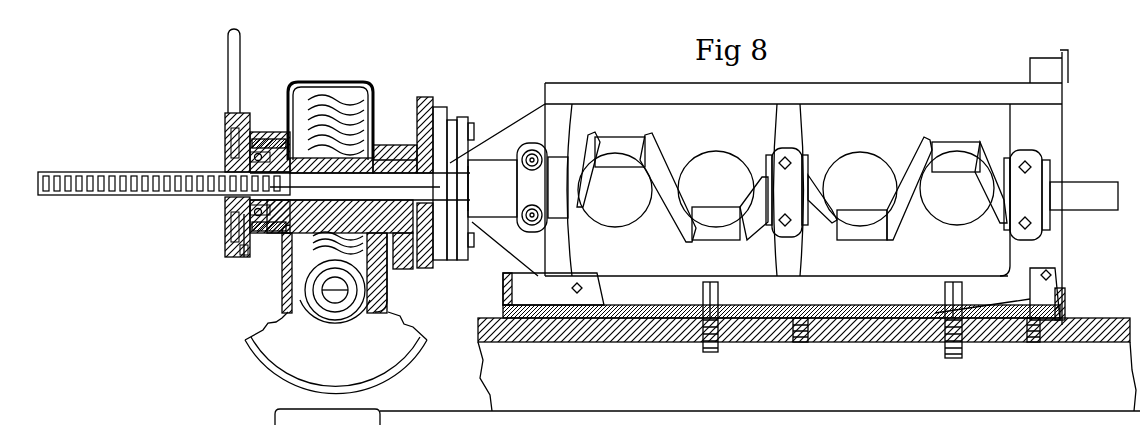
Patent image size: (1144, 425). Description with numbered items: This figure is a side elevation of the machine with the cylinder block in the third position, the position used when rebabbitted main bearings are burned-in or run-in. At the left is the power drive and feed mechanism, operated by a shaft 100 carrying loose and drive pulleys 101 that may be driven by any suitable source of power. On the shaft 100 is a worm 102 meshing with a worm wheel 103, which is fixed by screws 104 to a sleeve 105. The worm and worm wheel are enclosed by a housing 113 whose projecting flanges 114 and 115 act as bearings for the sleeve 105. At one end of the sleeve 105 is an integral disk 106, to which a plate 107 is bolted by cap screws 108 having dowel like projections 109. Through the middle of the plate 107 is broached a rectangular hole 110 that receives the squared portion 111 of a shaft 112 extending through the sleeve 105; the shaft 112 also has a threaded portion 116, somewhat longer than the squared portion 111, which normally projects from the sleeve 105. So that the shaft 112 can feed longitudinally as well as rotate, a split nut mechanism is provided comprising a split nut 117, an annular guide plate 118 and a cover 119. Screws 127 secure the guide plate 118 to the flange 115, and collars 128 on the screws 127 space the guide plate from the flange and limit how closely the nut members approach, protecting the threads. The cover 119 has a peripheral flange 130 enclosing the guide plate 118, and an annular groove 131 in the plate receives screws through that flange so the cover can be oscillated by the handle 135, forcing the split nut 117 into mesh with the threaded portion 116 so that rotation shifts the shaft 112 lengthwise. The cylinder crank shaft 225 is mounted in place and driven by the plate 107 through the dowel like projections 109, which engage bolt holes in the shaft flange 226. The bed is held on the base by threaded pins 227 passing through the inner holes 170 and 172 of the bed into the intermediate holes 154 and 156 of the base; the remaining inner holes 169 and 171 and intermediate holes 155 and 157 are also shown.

The shaft 100 is at (335, 290).
The loose and drive pulleys 101 is at (373, 364).
The worm 102 is at (300, 278).
The worm wheel 103 is at (320, 94).
The screws 104 is at (300, 143).
The sleeve 105 is at (374, 128).
The disk 106 is at (425, 97).
The plate 107 is at (447, 110).
The cap screws 108 is at (458, 120).
The dowel like projections 109 is at (470, 140).
The rectangular hole 110 is at (448, 162).
The squared portion 111 is at (387, 221).
The shaft 112 is at (227, 242).
The housing 113 is at (346, 80).
The flange 114 is at (380, 158).
The flange 115 is at (278, 132).
The threaded portion 116 is at (53, 196).
The split nut 117 is at (227, 200).
The annular guide plate 118 is at (228, 177).
The cover 119 is at (227, 157).
The screws 127 is at (228, 140).
The collars 128 is at (258, 133).
The peripheral flange 130 is at (245, 254).
The annular groove 131 is at (240, 257).
The handle 135 is at (231, 32).
The hole 154 is at (718, 350).
The hole 155 is at (797, 347).
The hole 156 is at (965, 347).
The hole 157 is at (1032, 347).
The inner hole 169 is at (598, 288).
The inner hole 170 is at (705, 290).
The inner hole 171 is at (838, 310).
The inner hole 172 is at (960, 307).
The cylinder crank shaft 225 is at (912, 170).
The shaft flange 226 is at (466, 135).
The threaded pins 227 is at (682, 343).